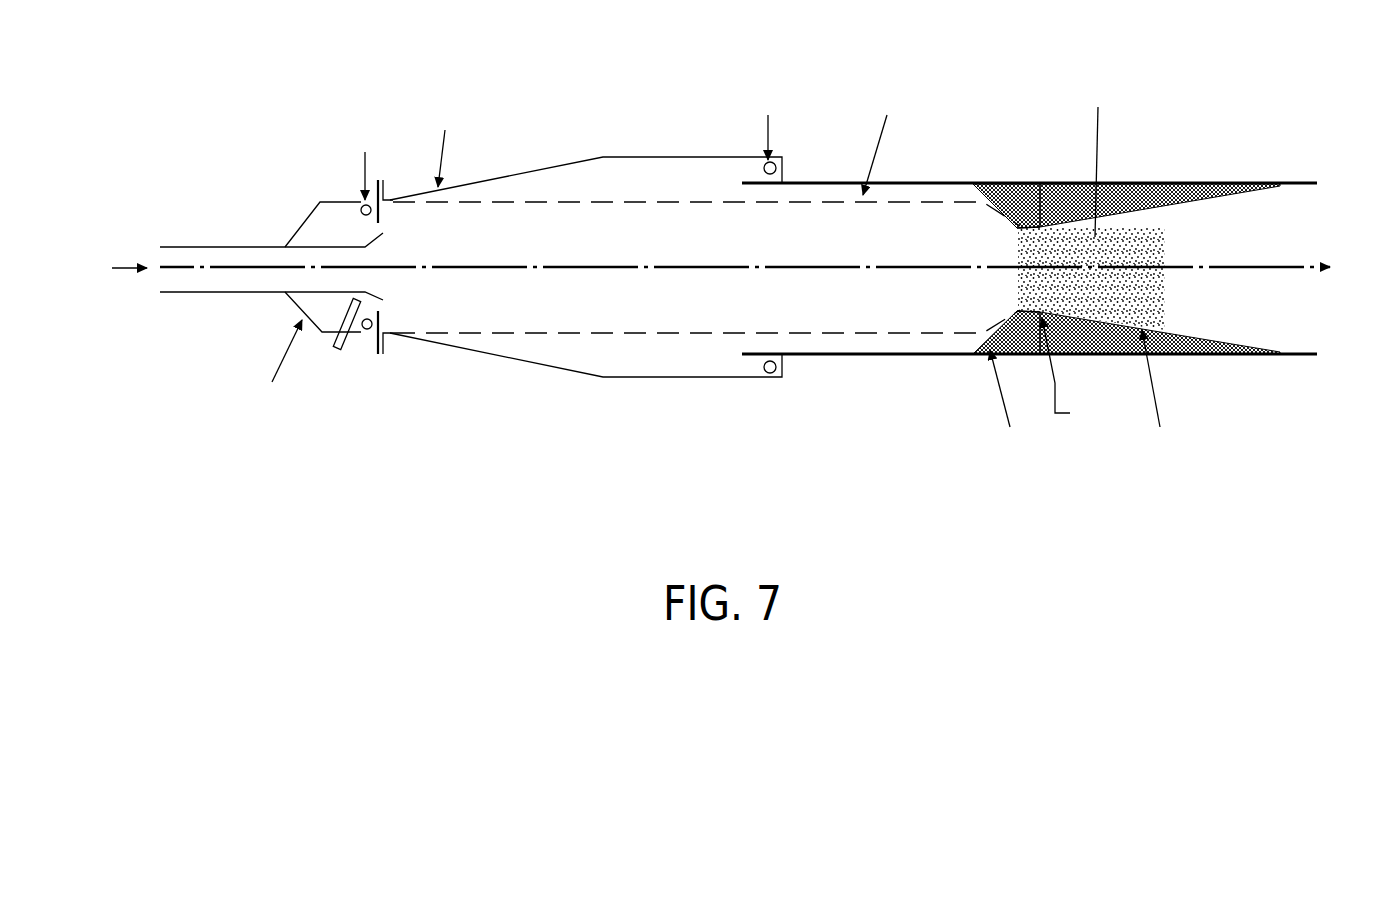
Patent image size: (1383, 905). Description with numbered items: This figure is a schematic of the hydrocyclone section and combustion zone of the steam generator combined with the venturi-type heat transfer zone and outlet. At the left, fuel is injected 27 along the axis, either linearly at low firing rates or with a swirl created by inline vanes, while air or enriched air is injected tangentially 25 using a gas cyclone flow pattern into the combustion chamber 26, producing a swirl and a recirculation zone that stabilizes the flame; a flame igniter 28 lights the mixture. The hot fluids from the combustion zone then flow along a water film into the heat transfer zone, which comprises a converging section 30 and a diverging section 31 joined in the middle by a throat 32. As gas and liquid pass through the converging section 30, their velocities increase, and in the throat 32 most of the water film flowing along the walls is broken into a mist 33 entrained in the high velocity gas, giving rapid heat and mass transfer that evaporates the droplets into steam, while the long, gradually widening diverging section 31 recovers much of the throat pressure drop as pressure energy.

The tangential air injection 25 is at (360, 200).
The combustion chamber 26 is at (523, 311).
The fuel injection 27 is at (235, 275).
The flame igniter 28 is at (347, 348).
The converging section 30 is at (1003, 187).
The diverging section 31 is at (1196, 187).
The throat 32 is at (1061, 313).
The mist 33 is at (1111, 188).